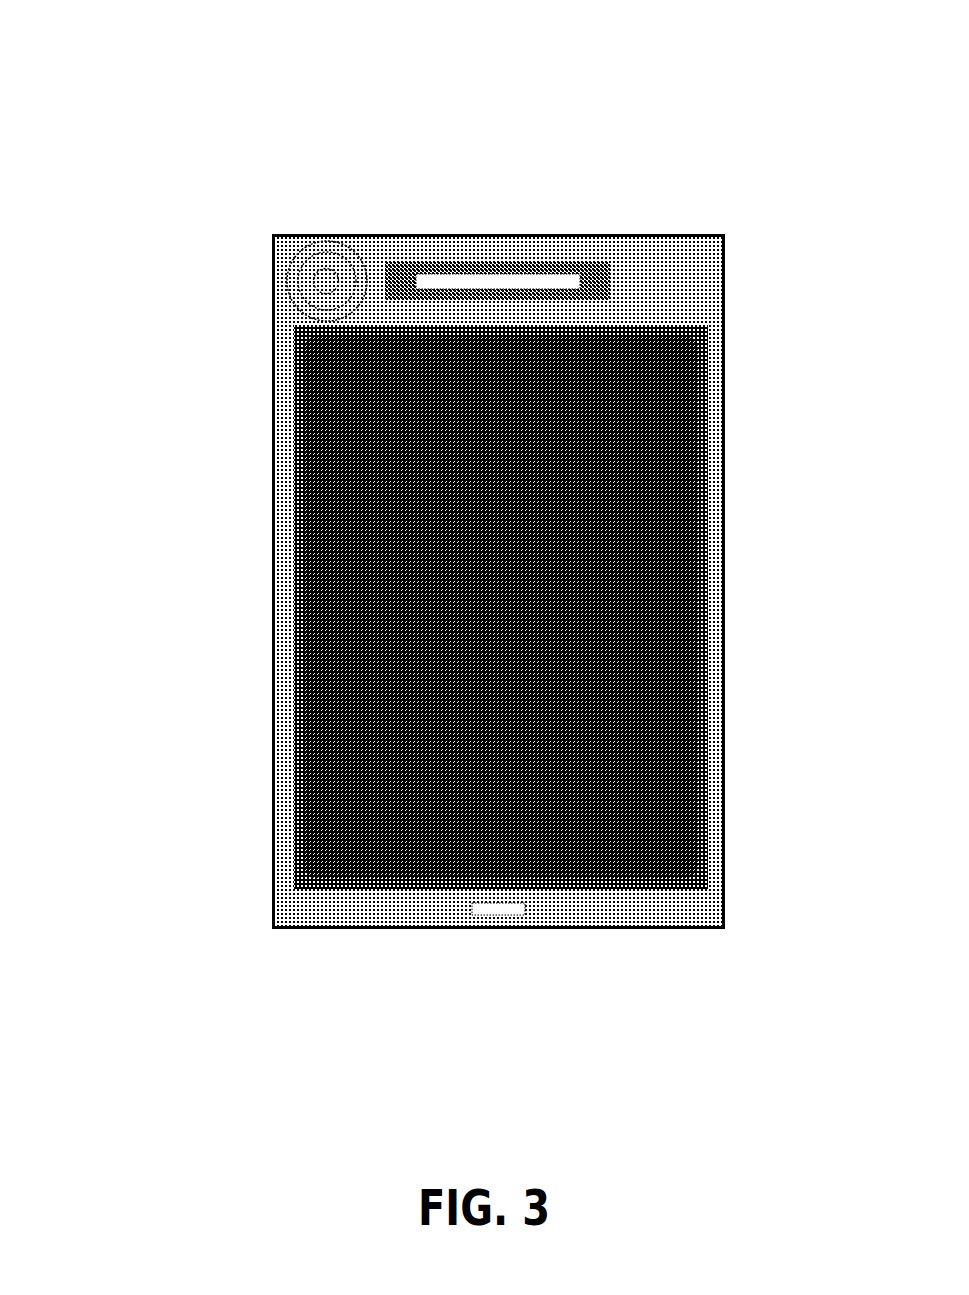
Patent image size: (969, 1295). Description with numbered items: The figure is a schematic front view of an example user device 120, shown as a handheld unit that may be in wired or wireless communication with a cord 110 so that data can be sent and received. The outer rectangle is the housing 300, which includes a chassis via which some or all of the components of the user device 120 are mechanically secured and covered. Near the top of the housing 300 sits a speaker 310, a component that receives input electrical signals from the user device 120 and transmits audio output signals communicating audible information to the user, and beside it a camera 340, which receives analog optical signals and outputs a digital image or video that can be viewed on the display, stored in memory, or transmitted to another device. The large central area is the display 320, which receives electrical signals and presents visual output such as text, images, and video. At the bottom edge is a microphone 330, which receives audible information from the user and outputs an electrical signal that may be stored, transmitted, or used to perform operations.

The cord 110 is at (183, 358).
The user device 120 is at (253, 56).
The housing 300 is at (273, 580).
The speaker 310 is at (497, 262).
The display 320 is at (707, 437).
The microphone 330 is at (500, 928).
The camera 340 is at (338, 253).